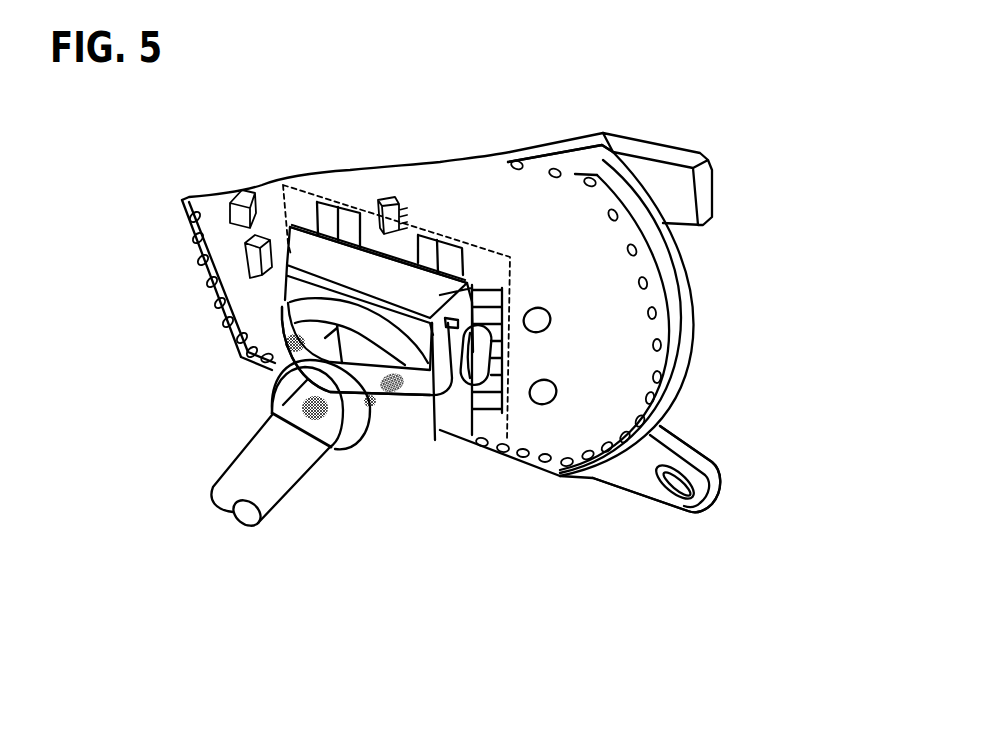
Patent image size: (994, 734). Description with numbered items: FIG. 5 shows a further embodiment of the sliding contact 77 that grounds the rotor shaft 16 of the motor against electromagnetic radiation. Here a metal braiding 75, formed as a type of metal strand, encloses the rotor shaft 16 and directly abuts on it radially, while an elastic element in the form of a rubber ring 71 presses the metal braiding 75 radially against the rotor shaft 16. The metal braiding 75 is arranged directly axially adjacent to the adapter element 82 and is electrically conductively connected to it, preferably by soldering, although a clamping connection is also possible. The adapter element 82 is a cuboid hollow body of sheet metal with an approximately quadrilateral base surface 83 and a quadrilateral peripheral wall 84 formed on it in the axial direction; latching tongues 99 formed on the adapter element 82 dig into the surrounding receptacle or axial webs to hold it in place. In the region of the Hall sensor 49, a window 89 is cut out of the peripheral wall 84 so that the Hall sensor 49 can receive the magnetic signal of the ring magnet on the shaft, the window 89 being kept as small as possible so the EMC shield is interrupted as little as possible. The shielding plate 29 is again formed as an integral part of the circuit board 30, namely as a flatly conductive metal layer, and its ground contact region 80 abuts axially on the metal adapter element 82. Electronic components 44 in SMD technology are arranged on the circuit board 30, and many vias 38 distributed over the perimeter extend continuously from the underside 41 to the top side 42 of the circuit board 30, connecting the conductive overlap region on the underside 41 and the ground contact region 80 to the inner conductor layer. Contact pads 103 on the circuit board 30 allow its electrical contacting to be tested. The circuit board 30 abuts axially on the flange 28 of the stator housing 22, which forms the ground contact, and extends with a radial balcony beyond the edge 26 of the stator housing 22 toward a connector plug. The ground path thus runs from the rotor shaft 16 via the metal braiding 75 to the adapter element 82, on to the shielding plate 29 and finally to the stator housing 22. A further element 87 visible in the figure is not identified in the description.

The top side 42 is at (535, 182).
The circuit board 30 is at (567, 185).
The shielding plate 29 is at (560, 153).
The stator housing 22 is at (667, 180).
The underside 41 is at (702, 310).
The vias 38 is at (650, 280).
The contact pads 103 is at (548, 320).
The flange 28 is at (633, 476).
The edge 26 is at (656, 469).
The peripheral wall 84 is at (345, 265).
The base surface 83 is at (283, 298).
The window 89 is at (380, 247).
The ground contact region 80 is at (480, 255).
The Hall sensor 49 is at (388, 200).
The adapter element 82 is at (275, 243).
The guide rails 87 is at (480, 262).
The latching tongues 99 is at (493, 310).
The sliding contact 77 is at (425, 396).
The metal braiding 75 is at (356, 351).
The rubber ring 71 is at (272, 407).
The rotor shaft 16 is at (253, 482).
The electronic components 44 is at (245, 262).